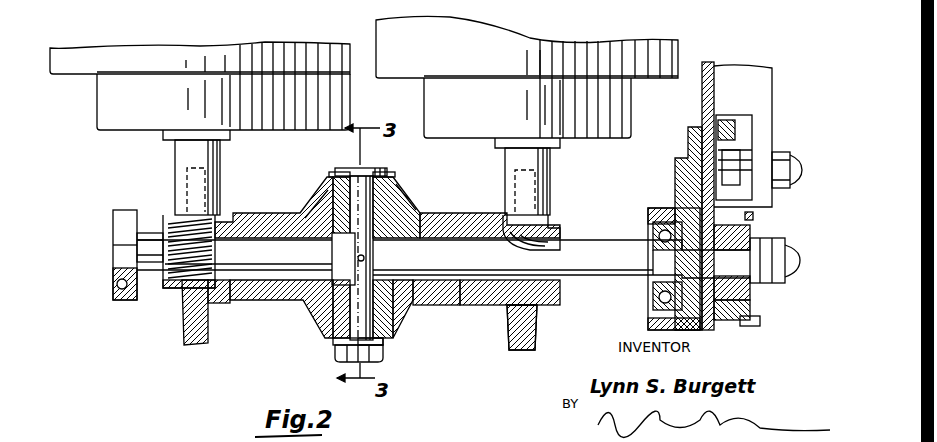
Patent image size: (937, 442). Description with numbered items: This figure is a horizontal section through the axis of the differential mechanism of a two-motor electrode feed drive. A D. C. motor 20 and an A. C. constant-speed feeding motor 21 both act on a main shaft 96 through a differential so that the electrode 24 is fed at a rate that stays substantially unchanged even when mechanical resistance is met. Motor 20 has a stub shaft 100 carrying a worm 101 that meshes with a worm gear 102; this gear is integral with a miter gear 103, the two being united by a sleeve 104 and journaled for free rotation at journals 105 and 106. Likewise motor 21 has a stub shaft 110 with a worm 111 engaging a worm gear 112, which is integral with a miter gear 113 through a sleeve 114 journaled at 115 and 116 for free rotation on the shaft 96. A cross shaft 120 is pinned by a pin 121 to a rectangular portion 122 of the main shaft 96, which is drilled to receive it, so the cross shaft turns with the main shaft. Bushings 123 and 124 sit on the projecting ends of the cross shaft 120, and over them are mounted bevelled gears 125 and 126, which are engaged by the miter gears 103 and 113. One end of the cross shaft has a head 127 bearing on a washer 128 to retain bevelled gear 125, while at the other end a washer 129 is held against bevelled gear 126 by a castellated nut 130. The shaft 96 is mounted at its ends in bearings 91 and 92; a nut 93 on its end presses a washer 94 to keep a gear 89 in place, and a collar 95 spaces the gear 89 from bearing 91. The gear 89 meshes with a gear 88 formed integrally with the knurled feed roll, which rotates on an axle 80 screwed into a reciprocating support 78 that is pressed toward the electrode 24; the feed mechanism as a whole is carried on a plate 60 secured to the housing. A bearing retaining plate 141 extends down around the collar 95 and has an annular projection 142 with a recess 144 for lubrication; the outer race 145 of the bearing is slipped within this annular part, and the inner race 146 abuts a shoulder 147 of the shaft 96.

The motor 20 is at (475, 33).
The motor 21 is at (131, 50).
The electrode 24 is at (753, 216).
The plate 60 is at (702, 65).
The reciprocating support 78 is at (772, 68).
The axle 80 is at (735, 172).
The gear 88 is at (722, 118).
The gear 89 is at (745, 318).
The bearing 91 is at (662, 348).
The bearing 92 is at (125, 302).
The nut 93 is at (780, 255).
The washer 94 is at (750, 232).
The collar 95 is at (708, 326).
The shaft 96 is at (587, 283).
The stub shaft 100 is at (552, 164).
The worm 101 is at (548, 230).
The worm gear 102 is at (538, 330).
The miter gear 103 is at (412, 307).
The sleeve 104 is at (466, 225).
The journal 105 is at (505, 340).
The journal 106 is at (415, 300).
The stub shaft 110 is at (176, 157).
The worm 111 is at (160, 222).
The worm gear 112 is at (185, 344).
The miter gear 113 is at (333, 343).
The sleeve 114 is at (302, 296).
The journal 115 is at (217, 303).
The journal 116 is at (293, 215).
The cross shaft 120 is at (337, 190).
The pin 121 is at (330, 256).
The rectangular portion 122 is at (405, 254).
The bushing 123 is at (393, 200).
The bushing 124 is at (387, 320).
The bevelled gear 125 is at (390, 182).
The bevelled gear 126 is at (386, 352).
The head 127 is at (357, 168).
The washer 128 is at (335, 174).
The washer 129 is at (333, 350).
The castellated nut 130 is at (340, 362).
The bearing retaining plate 141 is at (677, 158).
The annular projection 142 is at (665, 210).
The recess 144 is at (660, 262).
The outer race 145 is at (652, 312).
The inner race 146 is at (652, 297).
The shoulder 147 is at (652, 236).